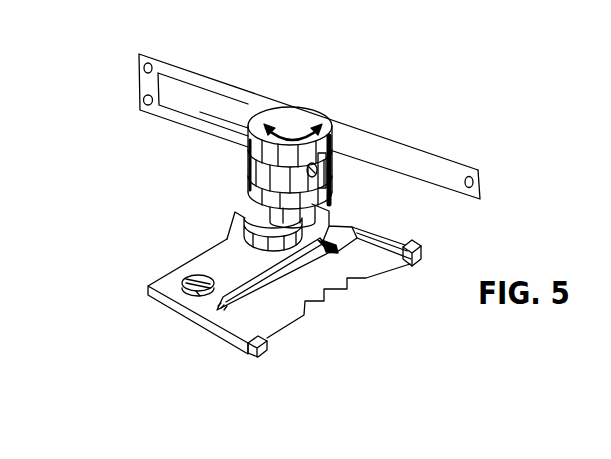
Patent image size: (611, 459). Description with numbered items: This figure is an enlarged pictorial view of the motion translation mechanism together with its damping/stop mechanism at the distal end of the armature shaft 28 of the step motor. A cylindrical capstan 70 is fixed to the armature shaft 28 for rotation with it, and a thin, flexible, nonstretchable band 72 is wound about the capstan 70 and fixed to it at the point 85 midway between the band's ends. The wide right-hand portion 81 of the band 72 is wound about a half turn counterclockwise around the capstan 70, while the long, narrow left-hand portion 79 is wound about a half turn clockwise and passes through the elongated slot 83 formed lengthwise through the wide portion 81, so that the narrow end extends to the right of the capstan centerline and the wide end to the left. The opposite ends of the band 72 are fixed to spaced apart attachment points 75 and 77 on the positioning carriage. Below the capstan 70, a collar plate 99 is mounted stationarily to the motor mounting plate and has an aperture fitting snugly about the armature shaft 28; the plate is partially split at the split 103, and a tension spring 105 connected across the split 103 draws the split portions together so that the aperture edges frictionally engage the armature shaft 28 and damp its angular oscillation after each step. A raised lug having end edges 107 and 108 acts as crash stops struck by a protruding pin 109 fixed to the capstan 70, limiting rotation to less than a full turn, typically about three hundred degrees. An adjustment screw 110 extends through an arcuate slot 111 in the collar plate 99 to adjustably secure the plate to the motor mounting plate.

The flexible nonstretchable band 72 is at (204, 72).
The cylindrical capstan 70 is at (318, 110).
The attachment point 75 is at (143, 98).
The right-hand portion of the band 81 is at (186, 125).
The elongated slot 83 is at (218, 110).
The band fixing point 85 is at (333, 160).
The left-hand portion of the band 79 is at (416, 148).
The attachment point 77 is at (483, 185).
The protruding pin 109 is at (330, 213).
The collar plate 99 is at (343, 217).
The armature shaft 28 is at (245, 203).
The end edge of raised lug 107 is at (235, 212).
The end edge of raised lug 108 is at (226, 236).
The adjustment screw 110 is at (187, 279).
The arcuate slot 111 is at (202, 296).
The split 103 is at (333, 247).
The tension spring 105 is at (320, 306).